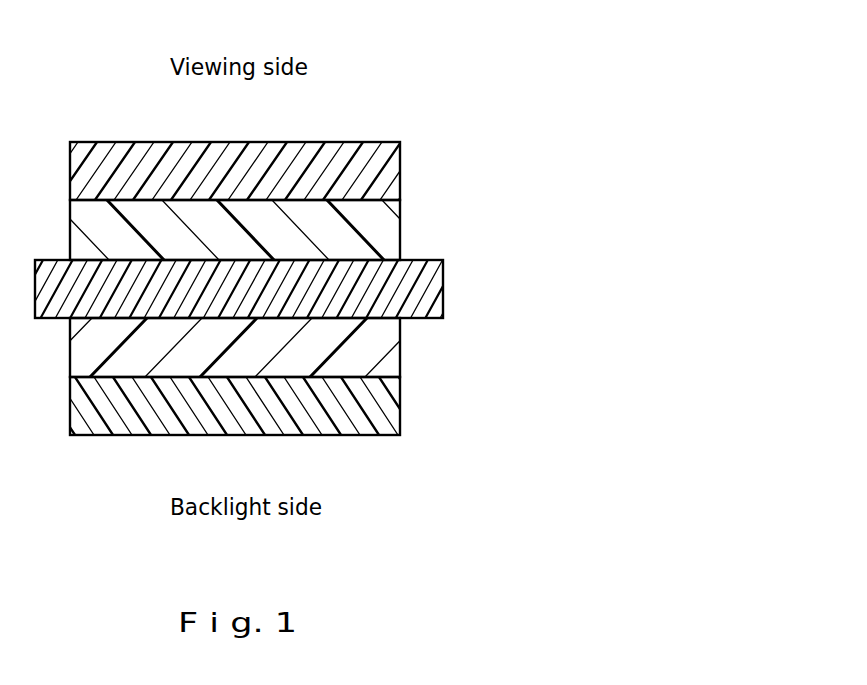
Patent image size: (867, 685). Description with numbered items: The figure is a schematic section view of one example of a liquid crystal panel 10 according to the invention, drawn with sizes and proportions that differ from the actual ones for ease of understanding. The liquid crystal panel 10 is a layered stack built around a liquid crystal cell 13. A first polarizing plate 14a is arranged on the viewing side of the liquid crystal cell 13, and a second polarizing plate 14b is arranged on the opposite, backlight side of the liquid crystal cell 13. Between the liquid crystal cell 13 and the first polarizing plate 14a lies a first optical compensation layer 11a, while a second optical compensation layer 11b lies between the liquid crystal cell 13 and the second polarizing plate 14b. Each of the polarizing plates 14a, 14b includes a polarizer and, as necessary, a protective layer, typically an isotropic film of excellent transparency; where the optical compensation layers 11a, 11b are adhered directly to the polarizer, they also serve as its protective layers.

The liquid crystal panel 10 is at (370, 93).
The first polarizing plate 14a is at (402, 170).
The first optical compensation layer 11a is at (392, 235).
The liquid crystal cell 13 is at (430, 292).
The second optical compensation layer 11b is at (390, 353).
The second polarizing plate 14b is at (392, 405).